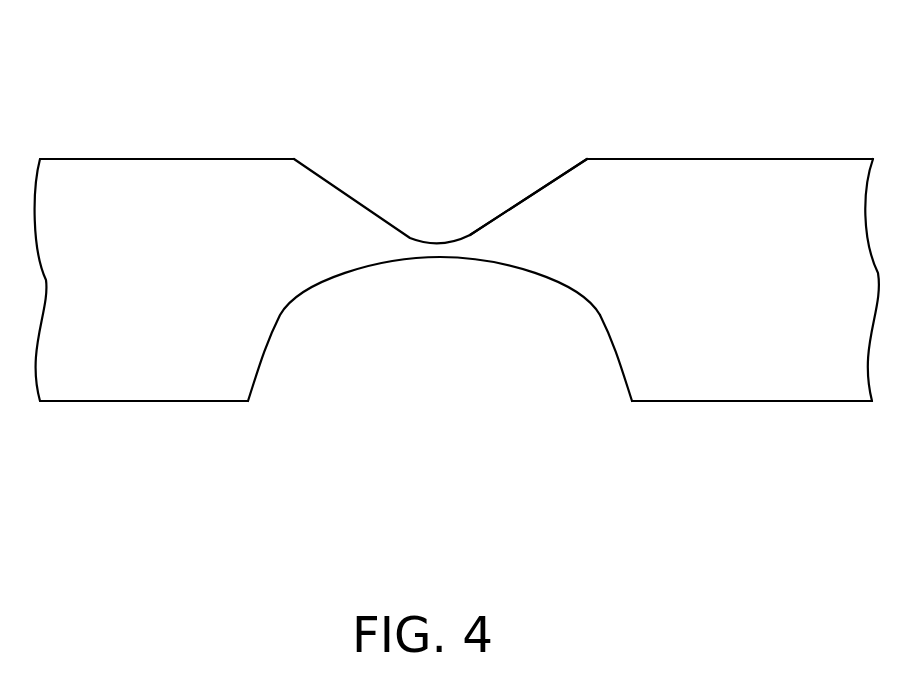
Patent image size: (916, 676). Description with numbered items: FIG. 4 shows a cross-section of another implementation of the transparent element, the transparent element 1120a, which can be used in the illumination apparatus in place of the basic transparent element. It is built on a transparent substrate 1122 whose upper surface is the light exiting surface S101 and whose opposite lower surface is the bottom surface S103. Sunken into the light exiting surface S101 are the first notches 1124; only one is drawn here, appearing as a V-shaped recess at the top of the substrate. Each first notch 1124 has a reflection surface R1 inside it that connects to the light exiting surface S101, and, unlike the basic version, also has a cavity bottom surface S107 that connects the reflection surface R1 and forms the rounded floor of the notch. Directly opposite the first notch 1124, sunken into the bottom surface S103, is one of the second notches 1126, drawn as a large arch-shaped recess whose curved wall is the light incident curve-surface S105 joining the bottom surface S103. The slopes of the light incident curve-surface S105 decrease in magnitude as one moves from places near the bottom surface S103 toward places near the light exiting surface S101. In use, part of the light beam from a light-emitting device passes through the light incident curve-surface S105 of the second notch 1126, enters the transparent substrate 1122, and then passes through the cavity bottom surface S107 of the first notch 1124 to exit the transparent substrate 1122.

The light exiting surface S101 is at (132, 157).
The bottom surface S103 is at (118, 402).
The light incident curve-surface S105 is at (267, 338).
The cavity bottom surface S107 is at (437, 242).
The reflection surface R1 is at (553, 182).
The transparent element 1120a is at (560, 351).
The first notches 1124 is at (468, 188).
The second notches 1126 is at (585, 342).
The transparent substrate 1122 is at (752, 431).